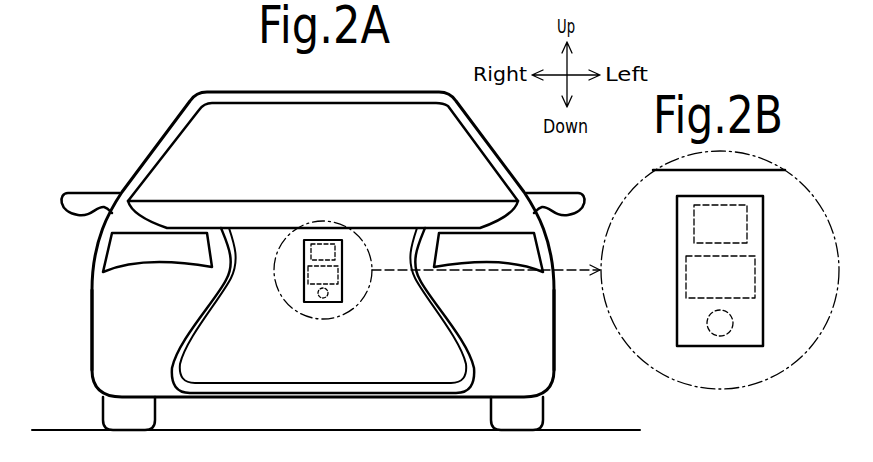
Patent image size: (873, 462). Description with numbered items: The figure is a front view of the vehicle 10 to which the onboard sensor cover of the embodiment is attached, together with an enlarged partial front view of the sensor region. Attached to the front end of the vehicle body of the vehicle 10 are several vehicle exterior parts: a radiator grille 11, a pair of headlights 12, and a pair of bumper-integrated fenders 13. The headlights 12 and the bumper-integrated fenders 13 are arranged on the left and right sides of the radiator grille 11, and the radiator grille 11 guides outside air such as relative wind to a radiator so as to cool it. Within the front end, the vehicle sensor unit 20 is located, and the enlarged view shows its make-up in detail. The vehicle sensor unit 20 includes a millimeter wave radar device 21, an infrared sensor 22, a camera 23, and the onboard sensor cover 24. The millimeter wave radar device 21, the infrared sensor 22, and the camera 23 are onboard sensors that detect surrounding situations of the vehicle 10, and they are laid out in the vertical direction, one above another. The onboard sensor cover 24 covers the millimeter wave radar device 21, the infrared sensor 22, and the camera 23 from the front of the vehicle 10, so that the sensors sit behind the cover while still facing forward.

In FIG. 2A, the vehicle 10 is at (148, 113).
In FIG. 2A, the radiator grille 11 is at (390, 240).
In FIG. 2B, the radiator grille 11 is at (790, 180).
In FIG. 2A, the headlights 12 is at (110, 249).
In FIG. 2A, the bumper-integrated fenders 13 is at (105, 318).
In FIG. 2A, the vehicle sensor unit 20 is at (304, 288).
In FIG. 2B, the vehicle sensor unit 20 is at (747, 327).
In FIG. 2B, the millimeter wave radar device 21 is at (747, 220).
In FIG. 2B, the infrared sensor 22 is at (757, 272).
In FIG. 2B, the camera 23 is at (733, 320).
In FIG. 2B, the onboard sensor cover 24 is at (755, 348).